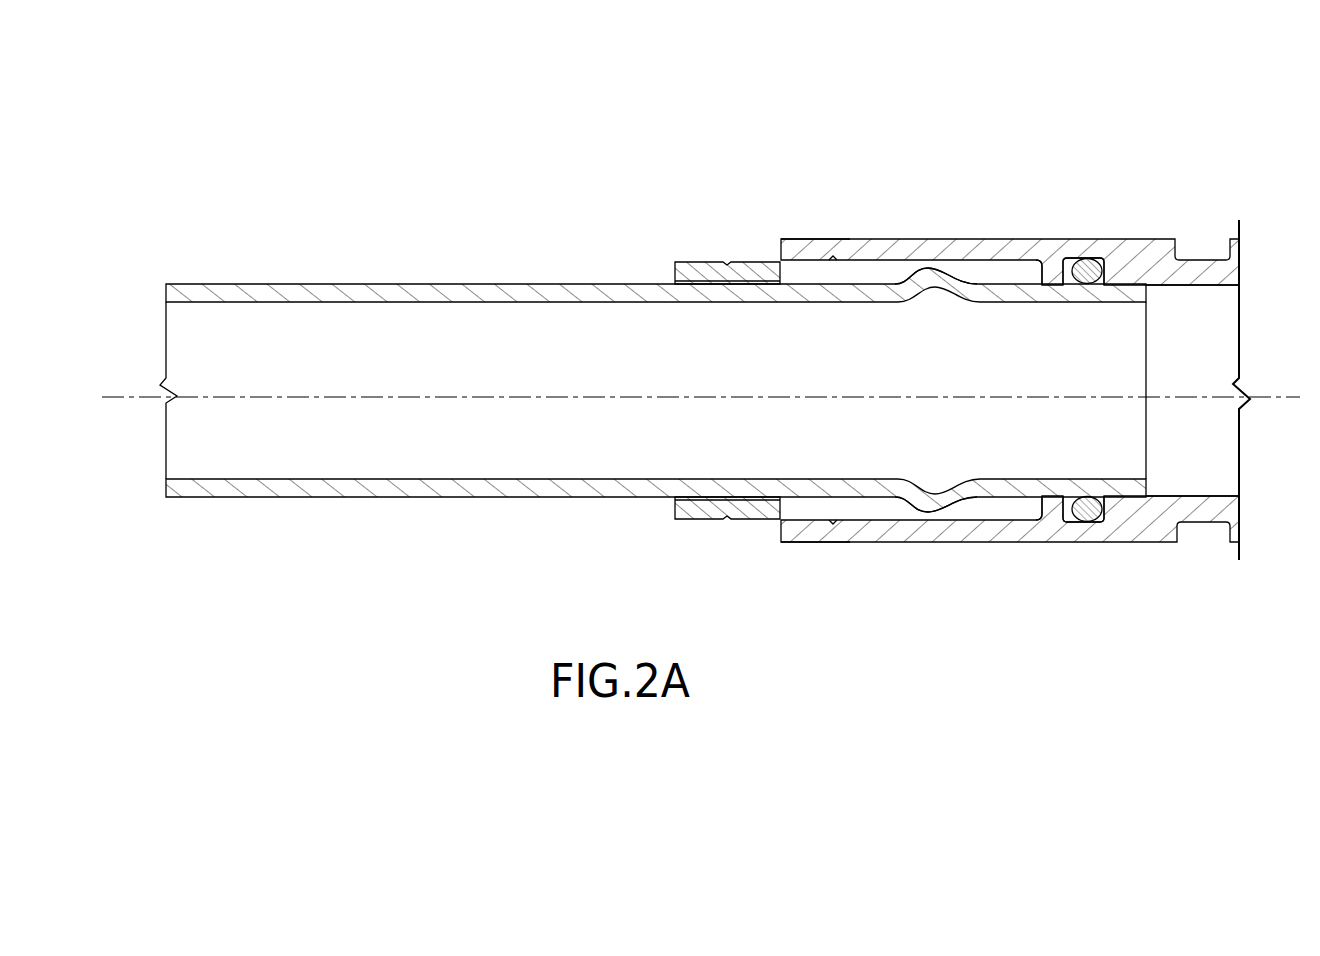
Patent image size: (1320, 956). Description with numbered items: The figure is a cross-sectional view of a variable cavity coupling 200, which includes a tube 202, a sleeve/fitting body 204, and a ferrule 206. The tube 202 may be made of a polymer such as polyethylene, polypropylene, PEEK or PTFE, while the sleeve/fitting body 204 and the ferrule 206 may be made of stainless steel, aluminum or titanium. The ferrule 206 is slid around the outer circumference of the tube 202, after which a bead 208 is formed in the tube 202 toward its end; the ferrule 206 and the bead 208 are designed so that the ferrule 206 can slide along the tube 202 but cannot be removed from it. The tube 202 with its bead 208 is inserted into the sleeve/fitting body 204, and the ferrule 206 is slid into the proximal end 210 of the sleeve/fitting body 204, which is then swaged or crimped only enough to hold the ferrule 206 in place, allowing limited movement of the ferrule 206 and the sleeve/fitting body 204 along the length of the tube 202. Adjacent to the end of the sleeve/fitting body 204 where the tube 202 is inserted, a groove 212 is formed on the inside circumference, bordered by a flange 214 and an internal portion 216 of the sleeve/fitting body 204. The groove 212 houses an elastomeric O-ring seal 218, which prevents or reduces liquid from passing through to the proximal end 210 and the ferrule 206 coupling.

The variable cavity coupling 200 is at (192, 133).
The tube 202 is at (444, 282).
The sleeve/fitting body 204 is at (948, 237).
The ferrule 206 is at (698, 259).
The bead 208 is at (950, 520).
The proximal end 210 is at (805, 237).
The groove 212 is at (1066, 256).
The flange 214 is at (1052, 506).
The internal portion 216 is at (1165, 507).
The elastomeric O-ring seal 218 is at (1088, 521).